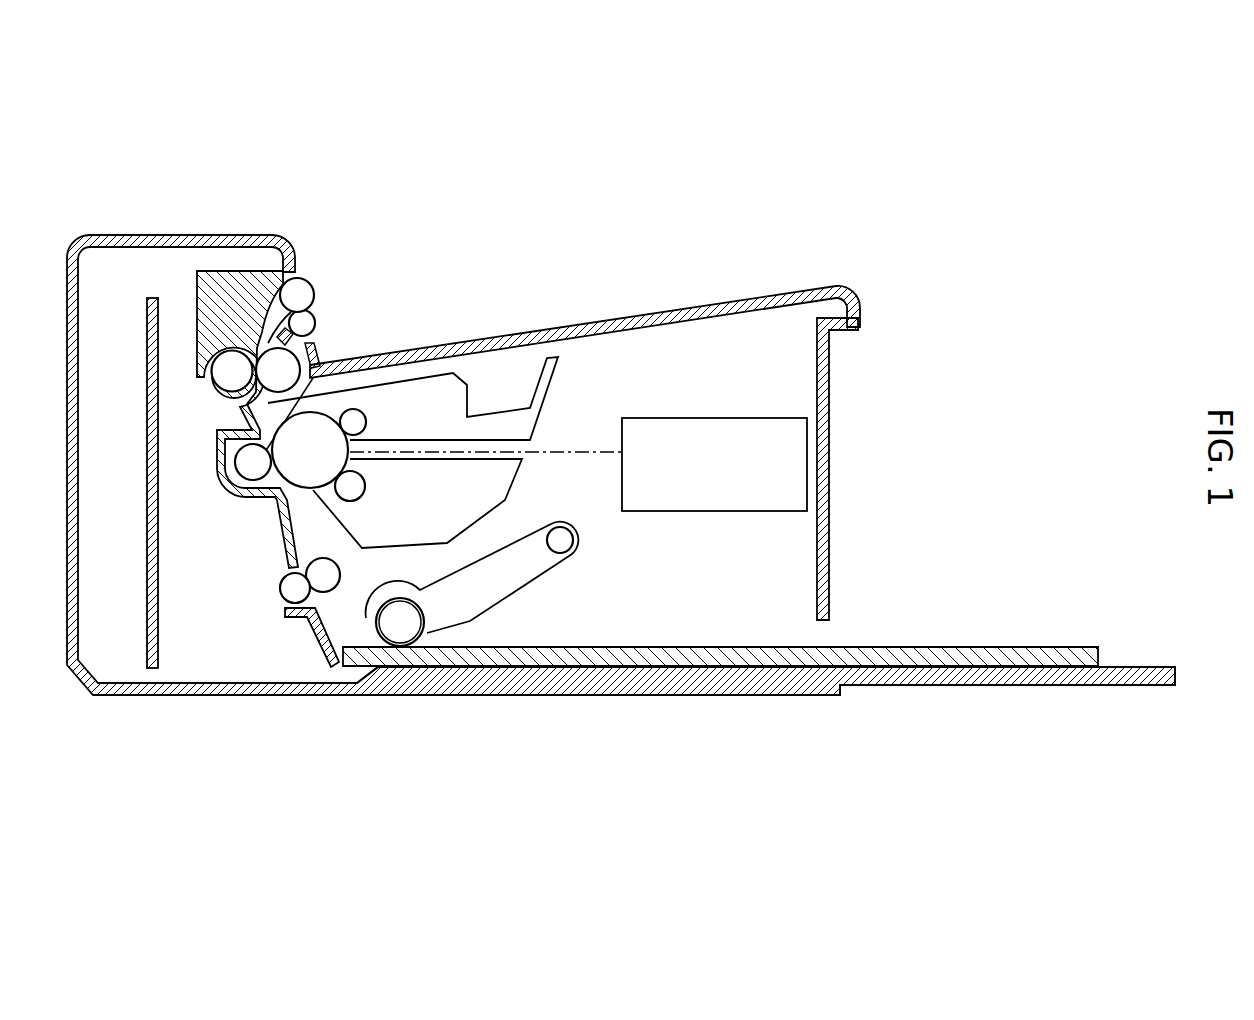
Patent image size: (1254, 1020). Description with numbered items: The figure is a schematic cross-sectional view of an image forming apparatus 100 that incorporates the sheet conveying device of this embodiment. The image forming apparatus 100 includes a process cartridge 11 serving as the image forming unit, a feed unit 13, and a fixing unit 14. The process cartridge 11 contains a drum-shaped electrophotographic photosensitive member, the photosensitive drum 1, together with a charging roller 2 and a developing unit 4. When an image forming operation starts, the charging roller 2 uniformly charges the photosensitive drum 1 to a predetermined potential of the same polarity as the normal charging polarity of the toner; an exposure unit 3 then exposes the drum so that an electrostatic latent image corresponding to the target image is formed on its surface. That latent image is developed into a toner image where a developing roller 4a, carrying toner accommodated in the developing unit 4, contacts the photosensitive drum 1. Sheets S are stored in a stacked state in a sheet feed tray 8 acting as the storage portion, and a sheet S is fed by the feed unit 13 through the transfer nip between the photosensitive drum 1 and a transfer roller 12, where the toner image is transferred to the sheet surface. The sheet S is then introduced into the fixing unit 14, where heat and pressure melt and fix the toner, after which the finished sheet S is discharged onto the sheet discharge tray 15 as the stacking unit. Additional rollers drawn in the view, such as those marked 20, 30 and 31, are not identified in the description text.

The image forming apparatus 100 is at (840, 246).
The fixing unit 14 is at (180, 262).
The roller 20 is at (297, 296).
The transfer roller 12 is at (322, 428).
The photosensitive drum 1 is at (352, 410).
The charging roller 2 is at (351, 487).
The developing unit 4 is at (443, 446).
The developing roller 4a is at (433, 477).
The sheet discharge tray 15 is at (555, 334).
The process cartridge 11 is at (471, 399).
The exposure unit 3 is at (710, 436).
The sheet S is at (1003, 645).
The discharge roller 30 is at (293, 590).
The discharge roller 31 is at (323, 580).
The feed unit 13 is at (466, 636).
The sheet feed tray 8 is at (636, 690).